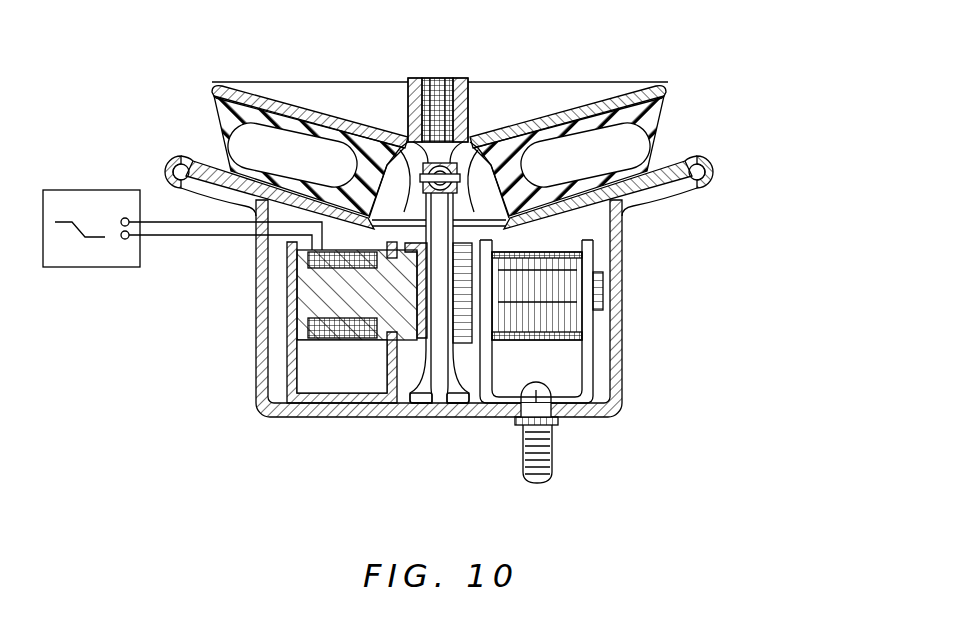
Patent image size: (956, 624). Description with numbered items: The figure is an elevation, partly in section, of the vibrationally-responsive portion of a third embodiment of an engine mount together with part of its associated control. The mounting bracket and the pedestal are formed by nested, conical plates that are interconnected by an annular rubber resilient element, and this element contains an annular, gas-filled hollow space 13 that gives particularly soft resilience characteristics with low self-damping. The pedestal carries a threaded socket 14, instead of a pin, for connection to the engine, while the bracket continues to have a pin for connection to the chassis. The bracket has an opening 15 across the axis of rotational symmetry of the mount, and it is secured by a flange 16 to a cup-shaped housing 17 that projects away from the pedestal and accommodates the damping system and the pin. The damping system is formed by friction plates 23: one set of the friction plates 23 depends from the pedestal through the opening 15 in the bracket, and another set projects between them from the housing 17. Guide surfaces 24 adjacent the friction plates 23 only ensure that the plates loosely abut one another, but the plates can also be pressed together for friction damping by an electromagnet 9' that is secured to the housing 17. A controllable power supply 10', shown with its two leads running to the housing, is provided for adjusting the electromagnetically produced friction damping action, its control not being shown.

The annular gas-filled hollow space 13 is at (291, 145).
The friction plates 23 is at (412, 205).
The threaded socket 14 is at (433, 105).
The flange 16 is at (174, 166).
The controllable power supply 10' is at (182, 200).
The opening 15 is at (487, 222).
The electromagnet 9' is at (584, 296).
The cup-shaped housing 17 is at (613, 380).
The guide surfaces 24 is at (415, 345).